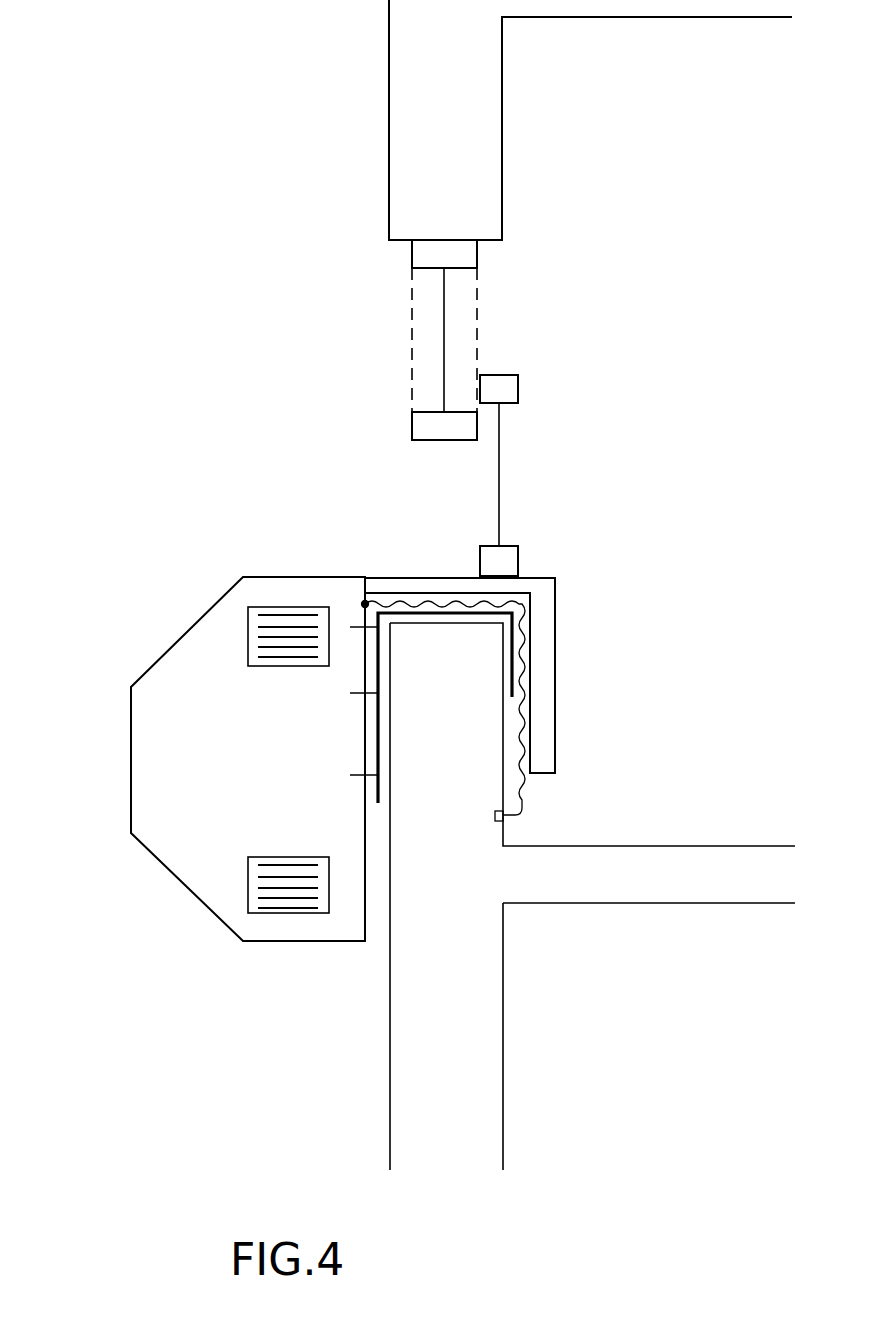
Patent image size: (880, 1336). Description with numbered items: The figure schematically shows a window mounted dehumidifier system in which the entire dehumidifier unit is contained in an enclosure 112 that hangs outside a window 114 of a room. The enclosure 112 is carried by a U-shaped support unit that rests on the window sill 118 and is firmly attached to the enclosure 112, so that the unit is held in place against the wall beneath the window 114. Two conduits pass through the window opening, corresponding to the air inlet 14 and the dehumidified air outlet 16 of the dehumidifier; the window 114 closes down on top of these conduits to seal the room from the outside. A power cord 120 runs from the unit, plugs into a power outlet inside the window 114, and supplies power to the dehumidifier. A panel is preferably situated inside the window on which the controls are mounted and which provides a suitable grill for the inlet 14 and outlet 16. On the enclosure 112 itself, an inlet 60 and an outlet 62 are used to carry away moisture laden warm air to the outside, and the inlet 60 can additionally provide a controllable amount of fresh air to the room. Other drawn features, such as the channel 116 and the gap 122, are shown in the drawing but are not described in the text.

The air inlet 14 is at (513, 587).
The dehumidified air outlet 16 is at (528, 600).
The inlet 60 is at (290, 622).
The outlet 62 is at (290, 908).
The enclosure 112 is at (133, 780).
The window 114 is at (556, 369).
The channel 116 is at (383, 787).
The window sill 118 is at (446, 678).
The power cord 120 is at (528, 804).
The gap 122 is at (565, 713).